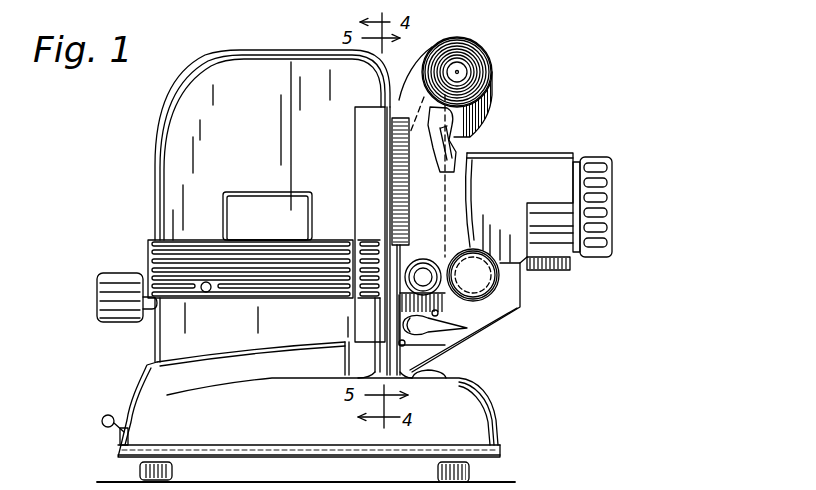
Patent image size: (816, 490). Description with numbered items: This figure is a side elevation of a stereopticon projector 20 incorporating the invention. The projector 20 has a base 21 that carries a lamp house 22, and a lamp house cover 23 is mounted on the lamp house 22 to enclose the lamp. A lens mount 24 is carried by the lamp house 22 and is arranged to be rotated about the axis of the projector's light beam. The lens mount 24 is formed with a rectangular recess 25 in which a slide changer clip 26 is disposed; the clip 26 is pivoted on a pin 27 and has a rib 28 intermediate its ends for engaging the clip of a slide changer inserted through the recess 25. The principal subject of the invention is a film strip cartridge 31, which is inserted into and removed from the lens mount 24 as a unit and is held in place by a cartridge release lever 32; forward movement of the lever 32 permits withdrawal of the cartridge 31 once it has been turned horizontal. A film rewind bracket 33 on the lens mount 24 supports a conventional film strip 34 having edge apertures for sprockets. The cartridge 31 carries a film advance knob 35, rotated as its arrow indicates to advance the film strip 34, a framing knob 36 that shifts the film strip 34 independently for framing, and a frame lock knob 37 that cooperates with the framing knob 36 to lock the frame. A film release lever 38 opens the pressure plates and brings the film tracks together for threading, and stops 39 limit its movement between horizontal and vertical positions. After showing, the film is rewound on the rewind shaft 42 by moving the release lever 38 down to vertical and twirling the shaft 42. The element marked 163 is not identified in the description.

The stereopticon projector 20 is at (147, 155).
The base 21 is at (485, 400).
The lamp house 22 is at (151, 340).
The lamp house cover 23 is at (200, 82).
The lens mount 24 is at (503, 150).
The rectangular recess 25 is at (399, 224).
The slide changer clip 26 is at (397, 167).
The pin 27 is at (430, 44).
The rib 28 is at (397, 197).
The film strip cartridge 31 is at (517, 318).
The cartridge release lever 32 is at (459, 127).
The film rewind bracket 33 is at (470, 46).
The film strip 34 is at (492, 55).
The film advance knob 35 is at (490, 295).
The framing knob 36 is at (430, 268).
The frame lock knob 37 is at (478, 258).
The film release lever 38 is at (432, 330).
The stops 39 is at (443, 312).
The rewind shaft 42 is at (464, 70).
The knob ring 163 is at (500, 276).